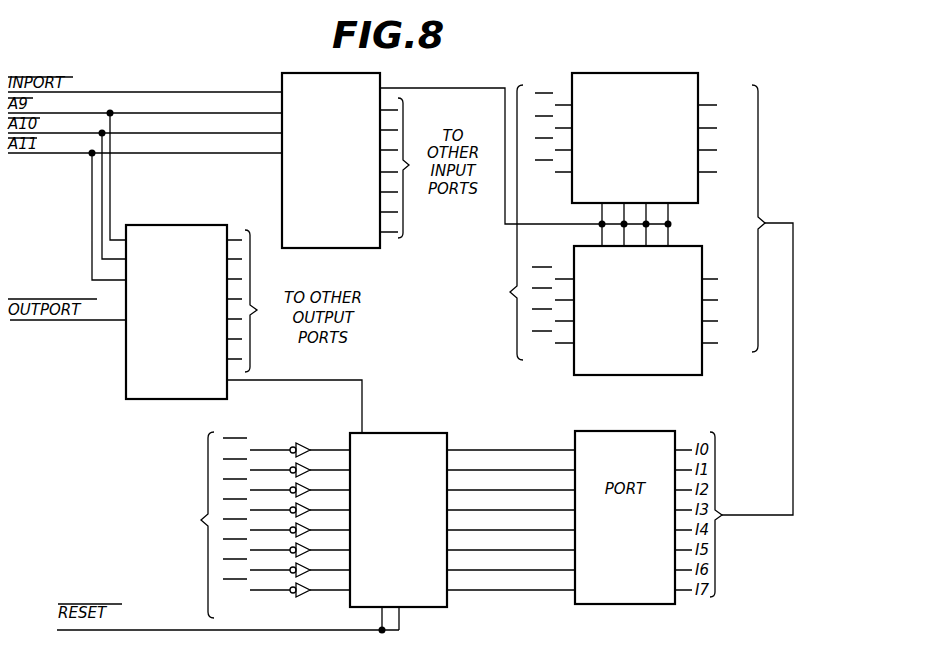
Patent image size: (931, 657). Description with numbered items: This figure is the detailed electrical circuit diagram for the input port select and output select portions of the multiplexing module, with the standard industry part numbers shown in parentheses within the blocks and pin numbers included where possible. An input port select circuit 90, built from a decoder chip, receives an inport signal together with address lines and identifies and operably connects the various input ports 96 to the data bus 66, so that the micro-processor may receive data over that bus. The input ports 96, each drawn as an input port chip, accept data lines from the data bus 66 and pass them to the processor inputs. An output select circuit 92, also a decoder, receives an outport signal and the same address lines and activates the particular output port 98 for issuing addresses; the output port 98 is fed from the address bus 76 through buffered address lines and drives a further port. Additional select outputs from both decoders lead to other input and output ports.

The input port select circuit 90 is at (306, 73).
The output select circuit 92 is at (126, 378).
The input ports 96 is at (686, 207).
The output port 98 is at (412, 433).
The data bus 66 is at (483, 222).
The address bus 76 is at (214, 525).